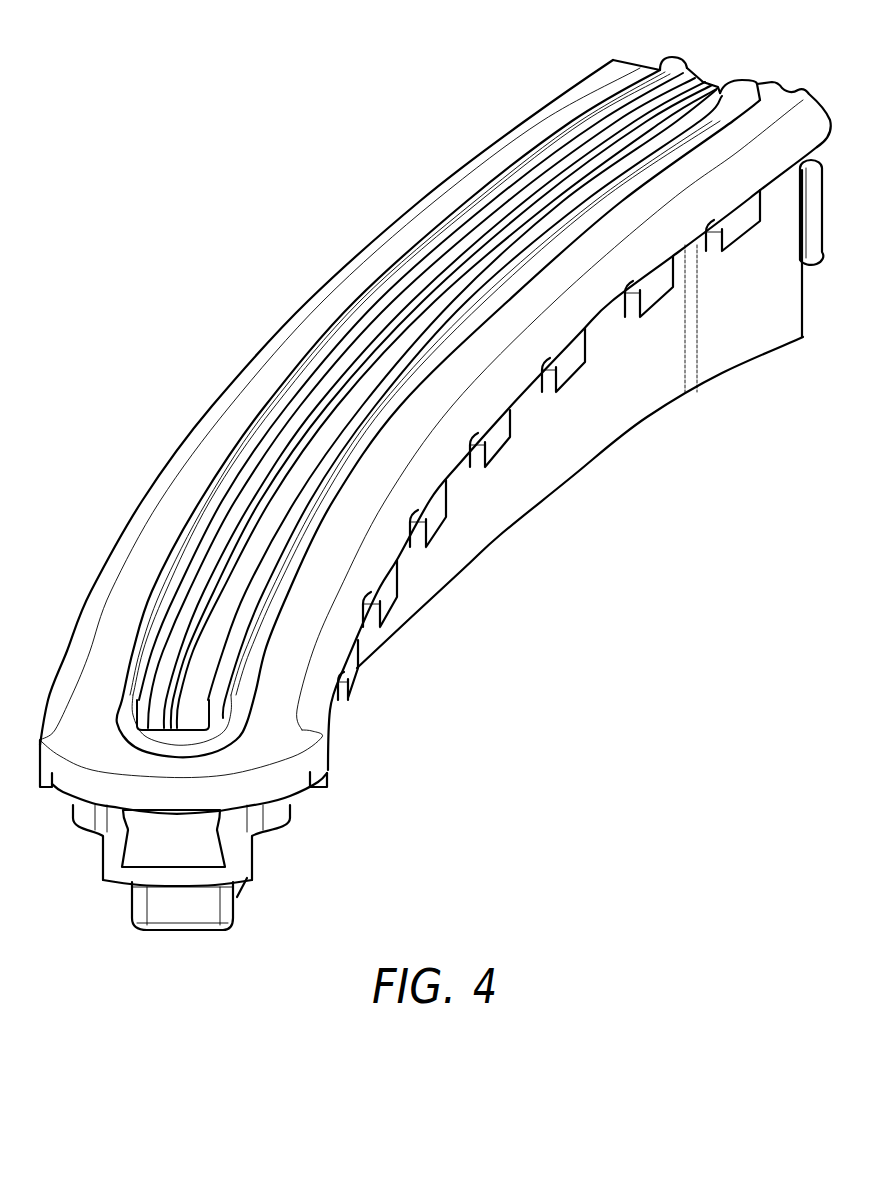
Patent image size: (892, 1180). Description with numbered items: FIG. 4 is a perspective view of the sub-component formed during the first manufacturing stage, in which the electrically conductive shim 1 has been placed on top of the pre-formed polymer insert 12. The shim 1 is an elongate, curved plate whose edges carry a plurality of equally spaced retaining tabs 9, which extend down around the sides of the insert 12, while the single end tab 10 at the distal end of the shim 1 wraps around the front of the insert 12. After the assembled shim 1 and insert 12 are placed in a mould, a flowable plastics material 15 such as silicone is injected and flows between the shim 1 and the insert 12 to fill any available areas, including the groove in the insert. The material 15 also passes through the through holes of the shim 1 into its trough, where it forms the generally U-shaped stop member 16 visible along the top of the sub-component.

The shim 1 is at (527, 313).
The retaining tabs 9 is at (500, 440).
The end tab 10 is at (150, 847).
The pre-formed polymer insert 12 is at (443, 568).
The flowable plastics material 15 is at (684, 72).
The stop member 16 is at (367, 307).